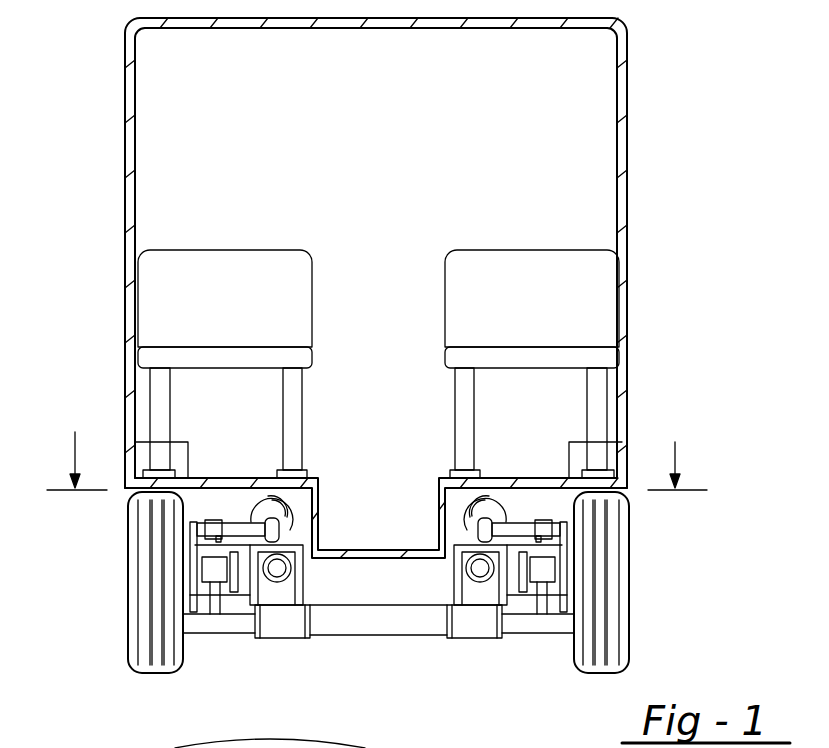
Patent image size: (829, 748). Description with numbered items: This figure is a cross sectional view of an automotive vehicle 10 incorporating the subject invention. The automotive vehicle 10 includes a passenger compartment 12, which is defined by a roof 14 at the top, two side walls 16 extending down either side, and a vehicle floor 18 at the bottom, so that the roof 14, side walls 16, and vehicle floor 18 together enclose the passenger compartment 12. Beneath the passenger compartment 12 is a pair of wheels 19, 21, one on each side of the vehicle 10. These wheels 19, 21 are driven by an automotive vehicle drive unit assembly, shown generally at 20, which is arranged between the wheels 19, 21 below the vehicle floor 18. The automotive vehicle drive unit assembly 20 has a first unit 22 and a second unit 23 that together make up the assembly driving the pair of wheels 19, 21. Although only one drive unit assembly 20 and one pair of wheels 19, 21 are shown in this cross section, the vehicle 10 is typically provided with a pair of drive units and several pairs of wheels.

The automotive vehicle 10 is at (93, 307).
The passenger compartment 12 is at (386, 214).
The roof 14 is at (282, 28).
The side walls 16 is at (135, 125).
The vehicle floor 18 is at (230, 477).
The wheel 19 is at (128, 652).
The automotive vehicle drive unit assembly 20 is at (362, 645).
The wheel 21 is at (577, 660).
The first unit 22 is at (268, 607).
The second unit 23 is at (454, 555).